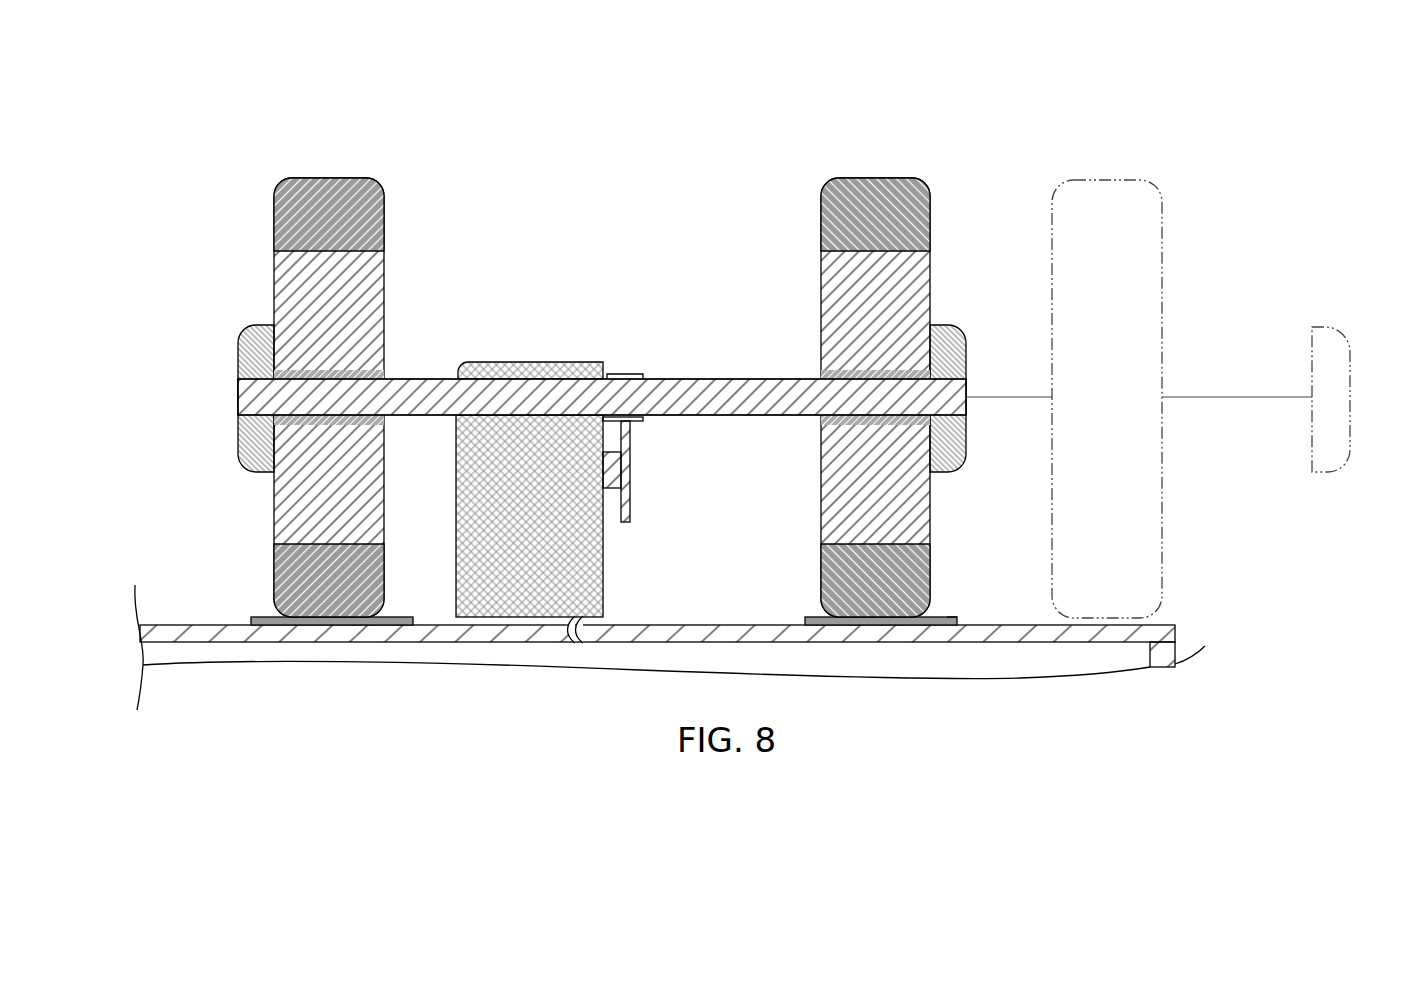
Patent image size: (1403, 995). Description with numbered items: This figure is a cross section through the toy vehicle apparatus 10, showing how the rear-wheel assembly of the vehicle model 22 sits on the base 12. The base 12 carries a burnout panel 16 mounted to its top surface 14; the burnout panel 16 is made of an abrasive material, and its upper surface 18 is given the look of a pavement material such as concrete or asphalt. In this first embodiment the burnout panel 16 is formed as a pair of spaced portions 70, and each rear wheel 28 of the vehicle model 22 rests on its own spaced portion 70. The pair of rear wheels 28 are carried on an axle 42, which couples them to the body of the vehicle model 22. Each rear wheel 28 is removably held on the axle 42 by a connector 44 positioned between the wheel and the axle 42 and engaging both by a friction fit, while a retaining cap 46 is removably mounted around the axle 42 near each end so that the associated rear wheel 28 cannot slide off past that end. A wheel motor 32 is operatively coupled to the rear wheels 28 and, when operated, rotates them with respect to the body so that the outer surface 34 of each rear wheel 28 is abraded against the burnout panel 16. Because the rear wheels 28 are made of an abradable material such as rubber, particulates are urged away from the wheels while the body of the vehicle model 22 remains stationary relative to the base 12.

The toy vehicle apparatus 10 is at (972, 146).
The base 12 is at (1175, 638).
The top surface 14 is at (1161, 624).
The burnout panel 16 is at (957, 618).
The upper surface 18 is at (947, 617).
The vehicle model 22 is at (328, 140).
The rear wheels 28 is at (385, 232).
The wheel motor 32 is at (560, 365).
The outer surface 34 is at (304, 178).
The axle 42 is at (696, 380).
The connectors 44 is at (385, 378).
The retaining caps 46 is at (238, 368).
The spaced portions 70 is at (262, 617).